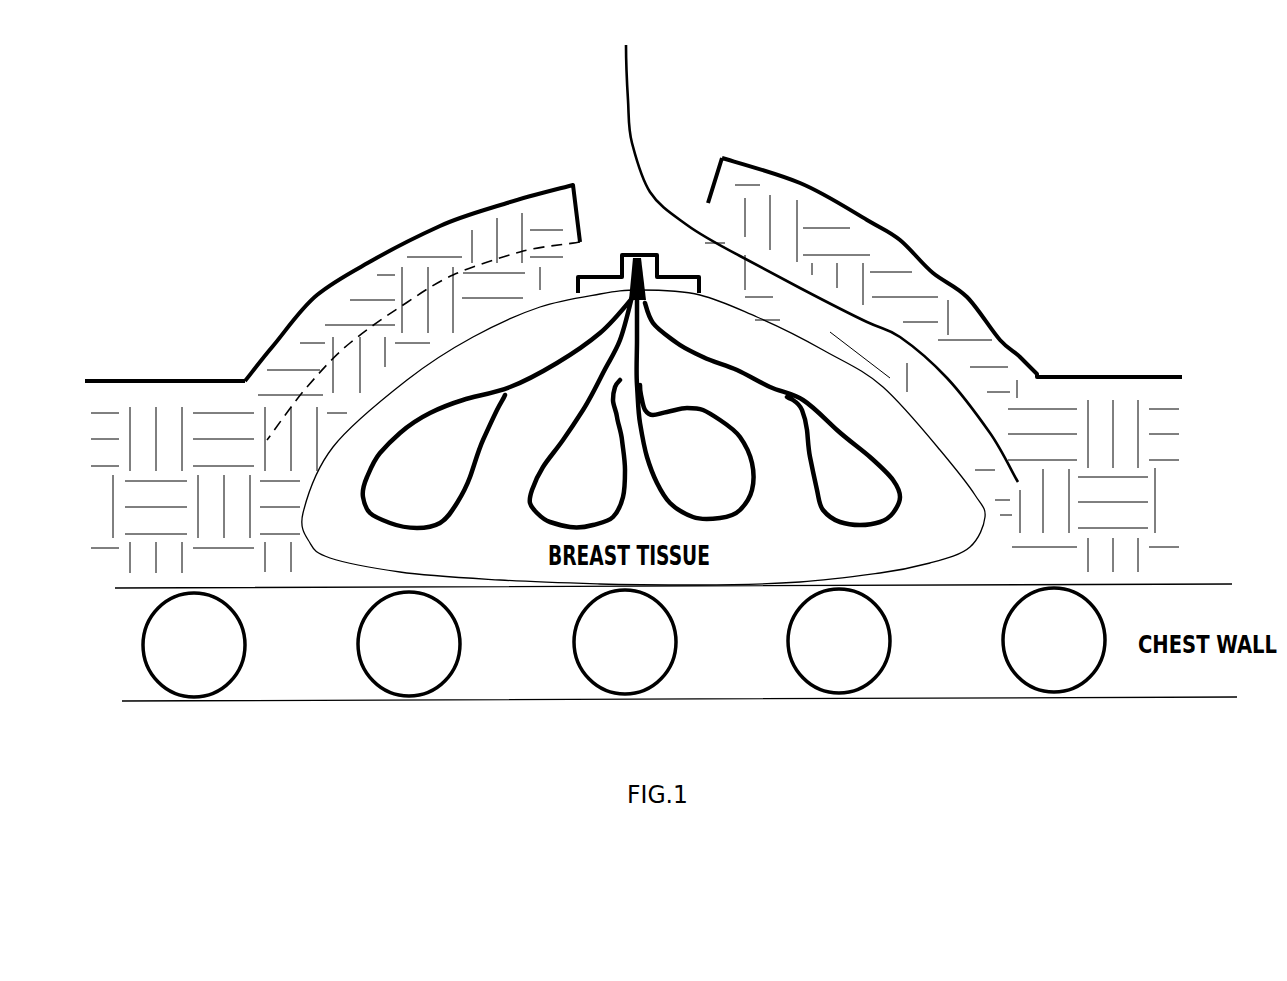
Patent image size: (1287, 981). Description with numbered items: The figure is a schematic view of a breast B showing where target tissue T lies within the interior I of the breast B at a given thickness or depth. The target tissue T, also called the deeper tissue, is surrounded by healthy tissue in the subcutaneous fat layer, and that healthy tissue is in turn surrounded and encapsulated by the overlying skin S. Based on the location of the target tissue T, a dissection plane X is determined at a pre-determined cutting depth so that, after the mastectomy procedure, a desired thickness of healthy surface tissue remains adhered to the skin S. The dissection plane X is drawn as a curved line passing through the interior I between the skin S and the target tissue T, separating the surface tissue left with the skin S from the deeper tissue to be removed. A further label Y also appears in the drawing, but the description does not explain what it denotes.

The dissection plane X is at (640, 157).
The breast B is at (326, 277).
The skin S is at (633, 269).
The dissection plane of breast tissue Y is at (643, 437).
The interior I is at (1190, 428).
The target tissue T is at (631, 412).